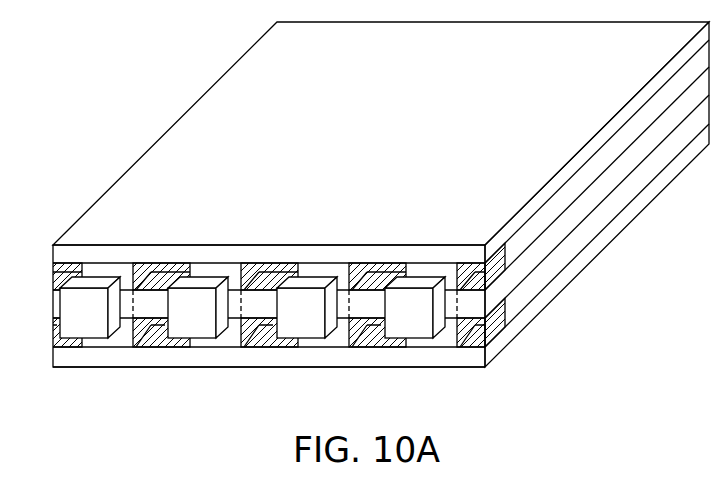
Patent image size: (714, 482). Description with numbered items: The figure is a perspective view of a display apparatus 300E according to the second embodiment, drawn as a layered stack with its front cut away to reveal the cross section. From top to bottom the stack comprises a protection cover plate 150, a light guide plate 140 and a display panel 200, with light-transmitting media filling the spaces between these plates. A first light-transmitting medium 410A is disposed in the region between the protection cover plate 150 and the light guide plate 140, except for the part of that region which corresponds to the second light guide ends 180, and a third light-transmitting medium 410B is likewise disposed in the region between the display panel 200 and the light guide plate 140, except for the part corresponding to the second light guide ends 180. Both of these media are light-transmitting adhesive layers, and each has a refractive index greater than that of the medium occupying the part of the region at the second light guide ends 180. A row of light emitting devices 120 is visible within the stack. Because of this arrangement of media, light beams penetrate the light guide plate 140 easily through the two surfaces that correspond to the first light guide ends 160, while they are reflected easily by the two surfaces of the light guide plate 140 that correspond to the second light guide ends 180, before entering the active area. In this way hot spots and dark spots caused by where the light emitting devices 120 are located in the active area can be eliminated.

The light emitting device 120 is at (84, 318).
The first light guide end 160 is at (130, 314).
The second light guide end 180 is at (55, 305).
The protection cover plate 150 is at (542, 200).
The first light-transmitting medium 410A is at (535, 225).
The light guide plate 140 is at (535, 250).
The third light-transmitting medium 410B is at (540, 277).
The display panel 200 is at (538, 305).
The display apparatus 300E is at (658, 417).